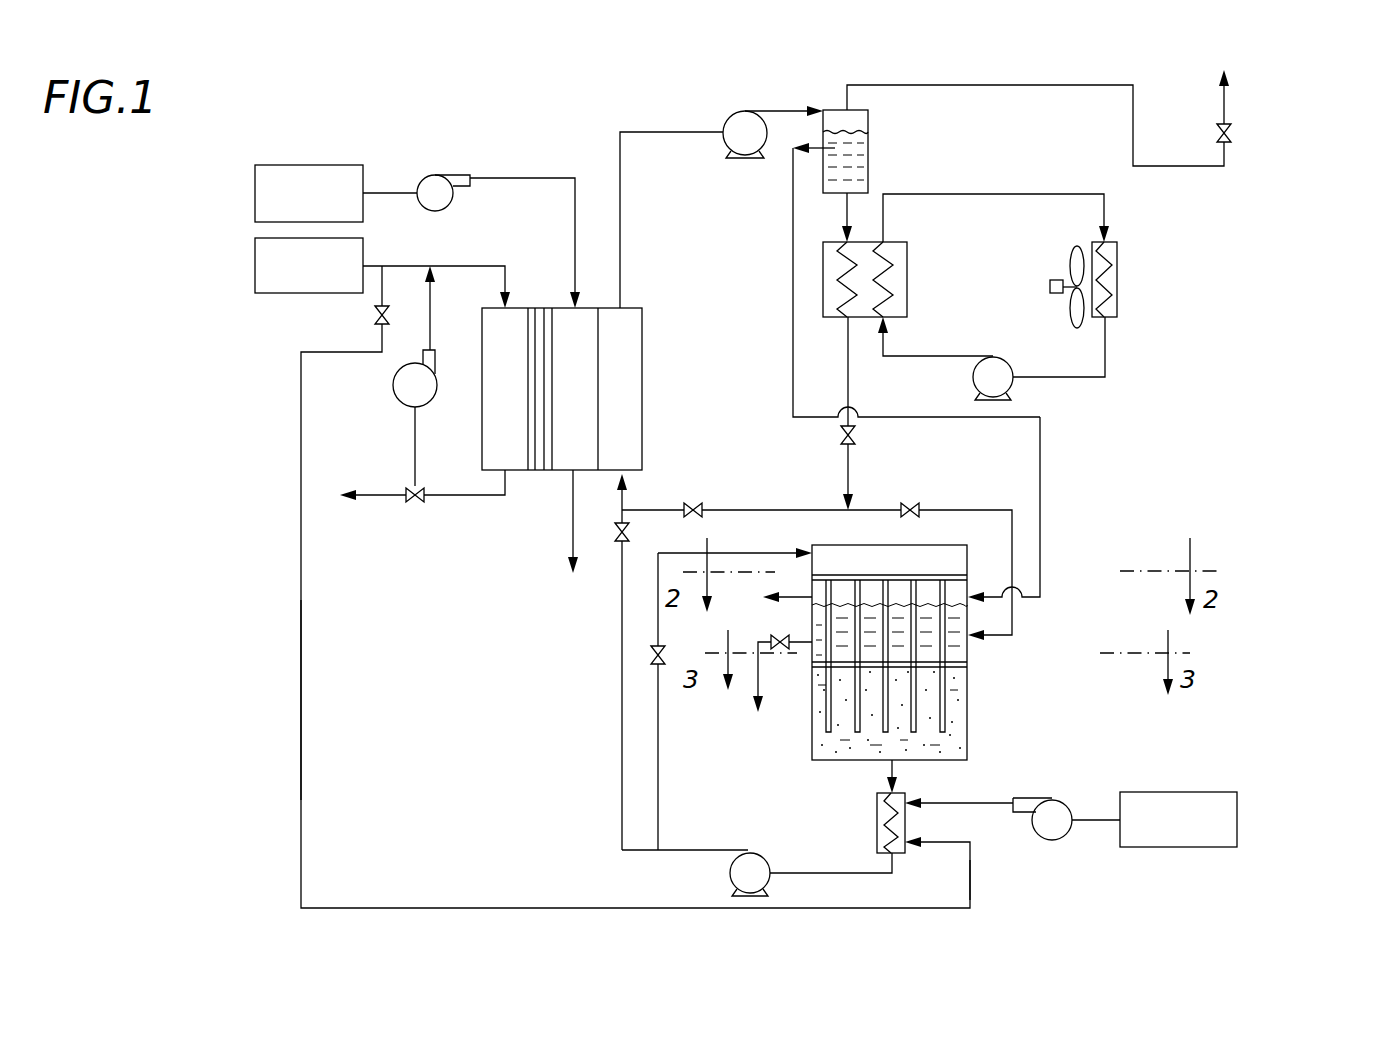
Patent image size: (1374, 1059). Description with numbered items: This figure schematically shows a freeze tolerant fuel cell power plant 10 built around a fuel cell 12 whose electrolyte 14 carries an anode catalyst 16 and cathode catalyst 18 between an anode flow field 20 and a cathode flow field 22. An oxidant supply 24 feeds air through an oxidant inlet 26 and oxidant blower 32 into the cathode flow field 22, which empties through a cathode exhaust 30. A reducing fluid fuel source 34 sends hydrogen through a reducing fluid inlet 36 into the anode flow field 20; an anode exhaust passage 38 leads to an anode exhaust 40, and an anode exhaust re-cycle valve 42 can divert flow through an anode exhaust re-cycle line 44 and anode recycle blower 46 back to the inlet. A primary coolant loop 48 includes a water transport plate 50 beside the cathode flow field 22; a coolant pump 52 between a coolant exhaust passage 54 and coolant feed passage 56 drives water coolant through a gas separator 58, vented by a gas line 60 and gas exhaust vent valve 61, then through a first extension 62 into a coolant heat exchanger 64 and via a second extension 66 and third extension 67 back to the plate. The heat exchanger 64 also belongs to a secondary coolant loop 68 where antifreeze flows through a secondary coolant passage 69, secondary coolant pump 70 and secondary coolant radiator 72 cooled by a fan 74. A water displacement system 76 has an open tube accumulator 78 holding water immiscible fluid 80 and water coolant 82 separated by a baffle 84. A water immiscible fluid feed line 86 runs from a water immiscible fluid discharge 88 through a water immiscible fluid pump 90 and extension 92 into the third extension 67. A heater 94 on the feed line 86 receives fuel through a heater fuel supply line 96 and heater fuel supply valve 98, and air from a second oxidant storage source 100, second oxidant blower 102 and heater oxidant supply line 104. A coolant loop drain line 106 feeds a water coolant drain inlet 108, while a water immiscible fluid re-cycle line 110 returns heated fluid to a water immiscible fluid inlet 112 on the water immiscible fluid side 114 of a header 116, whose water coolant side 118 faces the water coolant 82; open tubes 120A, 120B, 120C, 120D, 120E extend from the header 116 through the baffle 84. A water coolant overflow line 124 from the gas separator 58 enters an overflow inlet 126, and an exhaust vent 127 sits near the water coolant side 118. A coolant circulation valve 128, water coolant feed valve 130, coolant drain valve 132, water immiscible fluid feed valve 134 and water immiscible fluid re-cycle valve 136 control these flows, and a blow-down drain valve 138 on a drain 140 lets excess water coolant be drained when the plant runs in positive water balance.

The freeze tolerant fuel cell power plant 10 is at (1292, 250).
The fuel cell 12 is at (538, 258).
The electrolyte 14 is at (540, 470).
The anode catalyst 16 is at (531, 440).
The cathode catalyst 18 is at (546, 420).
The anode flow field 20 is at (518, 397).
The cathode flow field 22 is at (570, 389).
The oxidant supply 24 is at (275, 170).
The oxidant inlet 26 is at (560, 178).
The cathode exhaust 30 is at (572, 538).
The oxidant blower 32 is at (465, 176).
The reducing fluid fuel source 34 is at (262, 266).
The reducing fluid inlet 36 is at (512, 265).
The anode exhaust passage 38 is at (470, 494).
The anode exhaust 40 is at (380, 498).
The anode exhaust re-cycle valve 42 is at (405, 492).
The anode exhaust re-cycle line 44 is at (413, 436).
The anode recycle blower 46 is at (395, 368).
The primary coolant loop 48 is at (728, 273).
The water transport plate 50 is at (633, 397).
The coolant pump 52 is at (740, 118).
The coolant exhaust passage 54 is at (648, 132).
The coolant feed passage 56 is at (784, 113).
The gas separator 58 is at (862, 115).
The gas line 60 is at (1070, 86).
The gas exhaust vent valve 61 is at (1234, 136).
The first extension of the coolant feed passage 62 is at (855, 205).
The coolant heat exchanger 64 is at (866, 265).
The second extension of the coolant feed passage 66 is at (849, 363).
The third extension of the coolant feed passage 67 is at (764, 508).
The secondary coolant loop 68 is at (968, 312).
The secondary coolant passage 69 is at (1025, 194).
The secondary coolant pump 70 is at (988, 366).
The secondary coolant radiator 72 is at (1118, 285).
The fan 74 is at (1048, 283).
The water displacement system 76 is at (532, 828).
The open tube accumulator 78 is at (830, 762).
The water immiscible fluid 80 is at (970, 684).
The water coolant 82 is at (820, 626).
The baffle 84 is at (970, 664).
The water immiscible fluid feed line 86 is at (845, 876).
The water immiscible fluid discharge 88 is at (895, 784).
The water immiscible fluid pump 90 is at (733, 862).
The extension of the water immiscible fluid feed line 92 is at (620, 790).
The heater 94 is at (905, 850).
The heater fuel supply line 96 is at (300, 800).
The heater fuel supply valve 98 is at (376, 315).
The second oxidant storage source 100 is at (1220, 795).
The second oxidant blower 102 is at (1094, 778).
The heater oxidant supply line 104 is at (993, 812).
The coolant loop drain line 106 is at (1014, 505).
The water coolant drain inlet 108 is at (1015, 632).
The water immiscible fluid re-cycle line 110 is at (656, 716).
The water immiscible fluid inlet 112 is at (832, 558).
The water immiscible fluid side of the header 114 is at (868, 578).
The header 116 is at (925, 578).
The water coolant side of the header 118 is at (968, 590).
The open tube 120A is at (828, 728).
The open tube 120B is at (858, 735).
The open tube 120C is at (888, 738).
The open tube 120D is at (945, 714).
The open tube 120E is at (912, 738).
The water coolant overflow line 124 is at (792, 226).
The overflow inlet 126 is at (1030, 590).
The exhaust vent 127 is at (649, 532).
The coolant circulation valve 128 is at (840, 436).
The water coolant feed valve 130 is at (914, 506).
The coolant drain valve 132 is at (700, 506).
The water immiscible fluid feed valve 134 is at (620, 582).
The water immiscible fluid re-cycle valve 136 is at (654, 652).
The blow-down drain valve 138 is at (780, 652).
The drain 140 is at (757, 700).